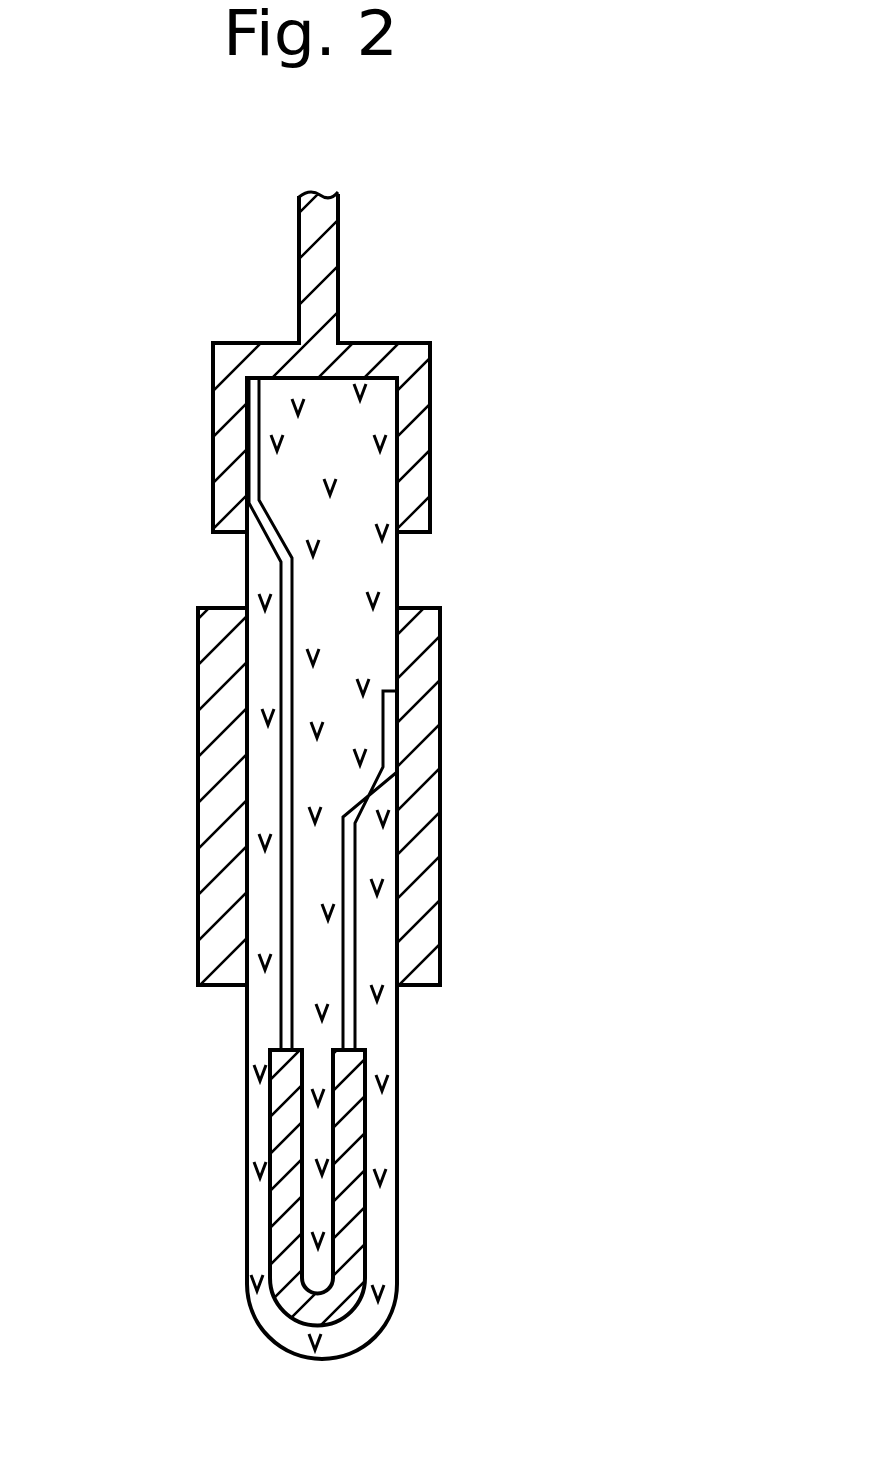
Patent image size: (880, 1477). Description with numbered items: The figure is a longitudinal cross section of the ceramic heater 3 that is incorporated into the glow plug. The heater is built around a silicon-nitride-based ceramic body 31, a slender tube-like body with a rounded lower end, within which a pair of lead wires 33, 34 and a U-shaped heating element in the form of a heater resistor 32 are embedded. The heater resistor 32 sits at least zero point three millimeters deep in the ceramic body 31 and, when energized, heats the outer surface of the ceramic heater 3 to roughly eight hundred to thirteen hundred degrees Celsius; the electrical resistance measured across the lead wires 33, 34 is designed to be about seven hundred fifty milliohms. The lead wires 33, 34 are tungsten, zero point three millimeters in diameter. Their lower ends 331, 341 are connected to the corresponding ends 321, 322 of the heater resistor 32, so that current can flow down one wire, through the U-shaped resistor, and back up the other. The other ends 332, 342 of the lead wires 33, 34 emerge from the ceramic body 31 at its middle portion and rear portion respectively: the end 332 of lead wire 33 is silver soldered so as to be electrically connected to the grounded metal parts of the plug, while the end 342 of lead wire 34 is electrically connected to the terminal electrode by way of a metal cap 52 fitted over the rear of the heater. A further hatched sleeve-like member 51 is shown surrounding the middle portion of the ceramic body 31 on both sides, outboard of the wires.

The ceramic heater 3 is at (415, 1147).
The Si3N4-based ceramic body 31 is at (365, 563).
The heater resistor 32 is at (382, 1233).
The end of heater resistor 321 is at (352, 1085).
The end of heater resistor 322 is at (282, 1084).
The lead wire 33 is at (372, 906).
The end of lead wire 331 is at (357, 1037).
The end of lead wire 332 is at (390, 707).
The lead wire 34 is at (264, 792).
The end of lead wire 341 is at (283, 1035).
The end of lead wire 342 is at (255, 432).
The lower holder 51 is at (415, 760).
The metal cap 52 is at (415, 400).